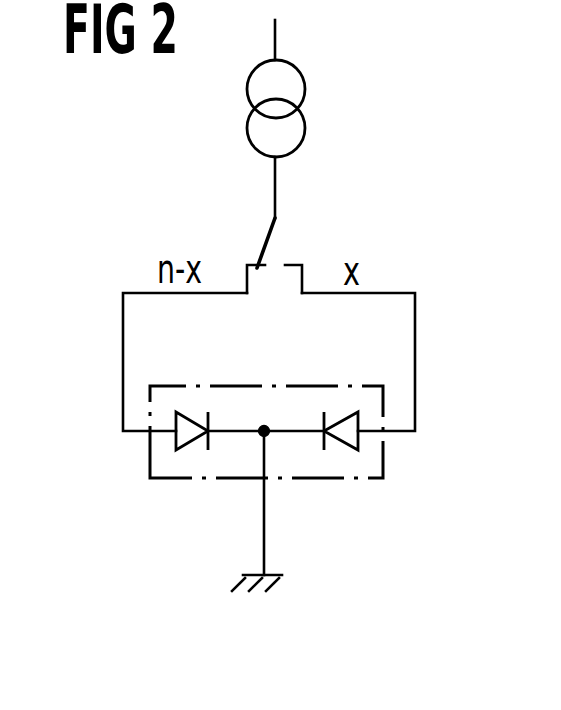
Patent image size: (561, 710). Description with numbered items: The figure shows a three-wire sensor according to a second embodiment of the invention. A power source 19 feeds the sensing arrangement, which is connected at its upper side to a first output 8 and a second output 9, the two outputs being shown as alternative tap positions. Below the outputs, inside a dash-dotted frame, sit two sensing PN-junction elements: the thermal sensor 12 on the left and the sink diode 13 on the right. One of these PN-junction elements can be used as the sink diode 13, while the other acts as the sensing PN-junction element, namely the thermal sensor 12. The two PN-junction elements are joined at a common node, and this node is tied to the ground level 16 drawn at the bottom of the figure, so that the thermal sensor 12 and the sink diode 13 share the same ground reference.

The power source 19 is at (306, 88).
The first output 8 is at (257, 268).
The second output 9 is at (285, 265).
The thermal sensor 12 is at (173, 438).
The sink diode 13 is at (362, 438).
The ground level 16 is at (268, 573).